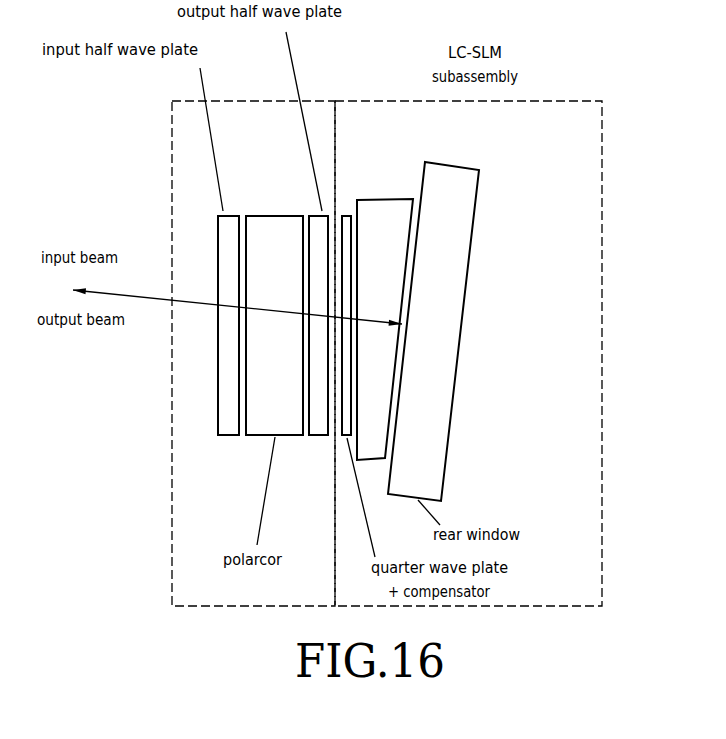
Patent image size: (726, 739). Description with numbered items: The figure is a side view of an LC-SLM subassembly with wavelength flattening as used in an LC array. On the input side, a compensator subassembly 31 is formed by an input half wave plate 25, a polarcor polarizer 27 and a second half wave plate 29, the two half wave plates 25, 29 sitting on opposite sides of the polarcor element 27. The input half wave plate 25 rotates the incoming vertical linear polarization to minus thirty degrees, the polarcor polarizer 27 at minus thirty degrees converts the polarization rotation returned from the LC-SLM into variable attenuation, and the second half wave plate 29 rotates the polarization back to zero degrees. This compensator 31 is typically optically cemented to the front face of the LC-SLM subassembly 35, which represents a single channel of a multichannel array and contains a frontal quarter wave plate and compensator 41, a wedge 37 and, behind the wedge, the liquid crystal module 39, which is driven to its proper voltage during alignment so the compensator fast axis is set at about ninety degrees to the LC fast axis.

The input half wave plate 25 is at (228, 216).
The polarcor polarizer 27 is at (257, 216).
The second half wave plate 29 is at (318, 216).
The compensator subassembly 31 is at (172, 448).
The LC-SLM subassembly 35 is at (602, 101).
The wedge 37 is at (387, 200).
The liquid crystal module 39 is at (455, 163).
The quarter wave plate and compensator 41 is at (346, 216).